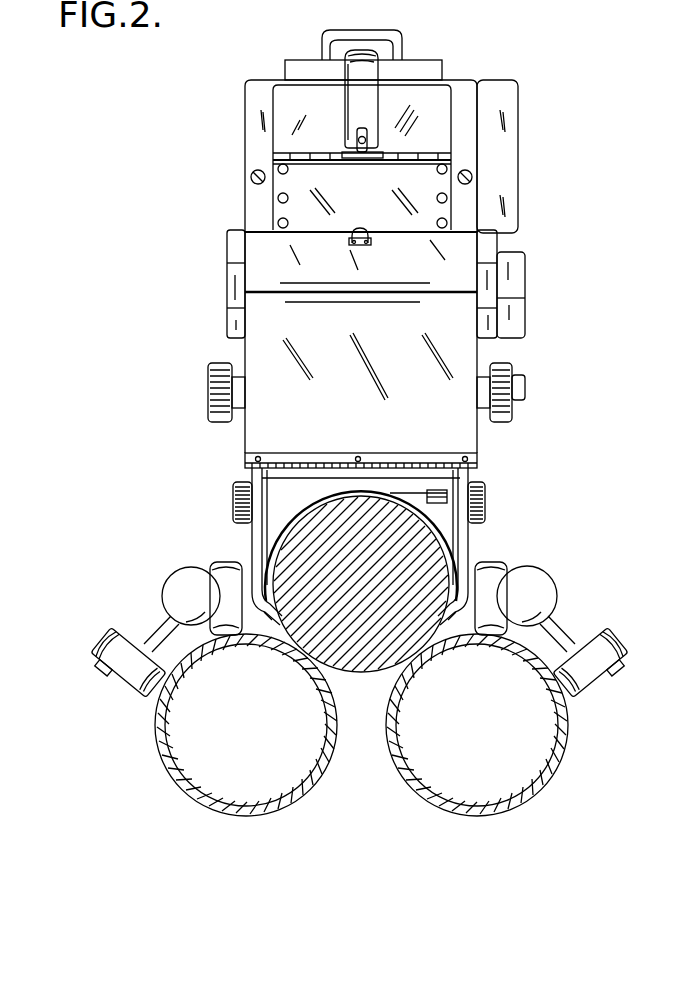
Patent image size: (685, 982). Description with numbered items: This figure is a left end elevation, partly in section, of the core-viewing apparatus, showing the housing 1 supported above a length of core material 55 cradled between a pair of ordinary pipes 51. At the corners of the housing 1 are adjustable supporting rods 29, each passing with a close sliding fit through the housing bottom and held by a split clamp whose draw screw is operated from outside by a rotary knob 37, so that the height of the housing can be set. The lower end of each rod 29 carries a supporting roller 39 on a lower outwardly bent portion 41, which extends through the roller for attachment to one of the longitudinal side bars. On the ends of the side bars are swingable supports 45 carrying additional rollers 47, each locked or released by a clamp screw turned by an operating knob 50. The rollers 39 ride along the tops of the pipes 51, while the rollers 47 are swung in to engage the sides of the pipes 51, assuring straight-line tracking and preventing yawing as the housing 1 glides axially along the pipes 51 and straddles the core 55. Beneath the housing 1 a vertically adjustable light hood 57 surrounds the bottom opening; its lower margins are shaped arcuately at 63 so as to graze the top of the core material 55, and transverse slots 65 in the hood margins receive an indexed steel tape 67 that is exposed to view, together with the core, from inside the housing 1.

The housing 1 is at (236, 192).
The adjustable supporting rod 29 is at (252, 543).
The rotary knob 37 is at (209, 398).
The supporting roller 39 is at (223, 569).
The lower outwardly bent portion 41 is at (357, 624).
The swingable support 45 is at (153, 630).
The roller 47 is at (137, 700).
The operating knob 50 is at (204, 607).
The pipe 51 is at (323, 770).
The core material 55 is at (361, 581).
The light hood 57 is at (276, 481).
The arcuate lower margin 63 is at (278, 522).
The transverse slot 65 is at (432, 487).
The indexed steel tape 67 is at (440, 500).